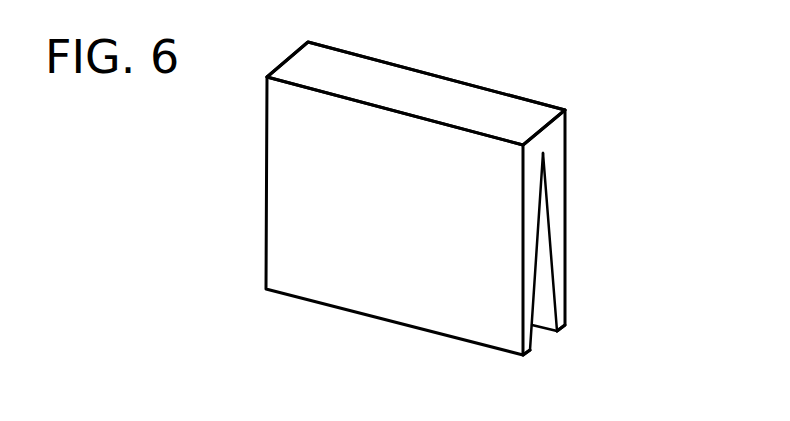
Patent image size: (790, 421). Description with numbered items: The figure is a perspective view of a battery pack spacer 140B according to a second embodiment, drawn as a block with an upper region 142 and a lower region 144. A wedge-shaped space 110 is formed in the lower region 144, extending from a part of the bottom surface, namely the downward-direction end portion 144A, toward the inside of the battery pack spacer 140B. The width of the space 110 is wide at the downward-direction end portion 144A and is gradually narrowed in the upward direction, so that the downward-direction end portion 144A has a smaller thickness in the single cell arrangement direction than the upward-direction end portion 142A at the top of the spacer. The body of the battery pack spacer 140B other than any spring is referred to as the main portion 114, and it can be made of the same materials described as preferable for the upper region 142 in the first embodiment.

The battery pack spacer 140B is at (672, 76).
The upper region 142 is at (247, 78).
The upward-direction end portion 142A is at (413, 95).
The lower region 144 is at (247, 212).
The downward-direction end portion 144A is at (530, 353).
The main portion 114 is at (555, 185).
The wedge-shaped space 110 is at (543, 302).